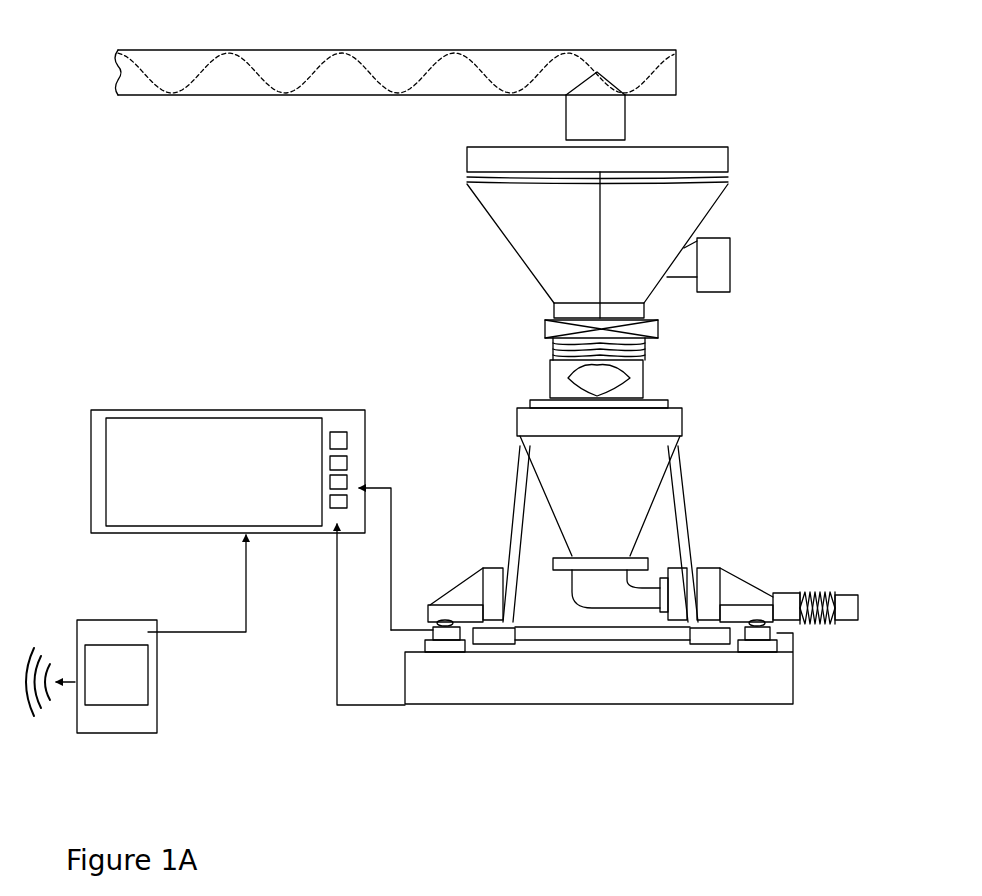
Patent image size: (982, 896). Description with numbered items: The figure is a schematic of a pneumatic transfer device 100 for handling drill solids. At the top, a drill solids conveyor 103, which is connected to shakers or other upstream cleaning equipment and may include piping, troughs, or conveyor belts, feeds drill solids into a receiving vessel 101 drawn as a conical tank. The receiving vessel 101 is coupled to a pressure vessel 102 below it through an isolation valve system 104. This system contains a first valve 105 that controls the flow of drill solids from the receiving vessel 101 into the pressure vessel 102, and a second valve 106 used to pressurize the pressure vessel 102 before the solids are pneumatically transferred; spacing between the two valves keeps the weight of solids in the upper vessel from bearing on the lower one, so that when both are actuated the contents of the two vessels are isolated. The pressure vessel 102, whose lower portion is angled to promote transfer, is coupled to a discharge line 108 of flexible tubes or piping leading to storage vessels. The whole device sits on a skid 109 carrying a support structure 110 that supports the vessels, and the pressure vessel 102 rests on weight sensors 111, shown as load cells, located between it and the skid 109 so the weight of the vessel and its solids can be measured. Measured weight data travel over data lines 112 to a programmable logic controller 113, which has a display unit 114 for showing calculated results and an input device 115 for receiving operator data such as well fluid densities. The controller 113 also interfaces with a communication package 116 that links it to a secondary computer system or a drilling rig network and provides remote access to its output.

The pneumatic transfer device 100 is at (796, 270).
The receiving vessel 101 is at (728, 190).
The pressure vessel 102 is at (684, 445).
The drill solids conveyor 103 is at (510, 45).
The isolation valve system 104 is at (523, 295).
The first valve 105 is at (645, 311).
The second valve 106 is at (645, 377).
The discharge line 108 is at (838, 597).
The skid 109 is at (797, 652).
The support structure 110 is at (688, 520).
The weight sensors 111 is at (447, 624).
The data lines 112 is at (392, 535).
The programmable logic controller 113 is at (197, 450).
The display unit 114 is at (214, 472).
The input device 115 is at (338, 430).
The communication package 116 is at (136, 634).